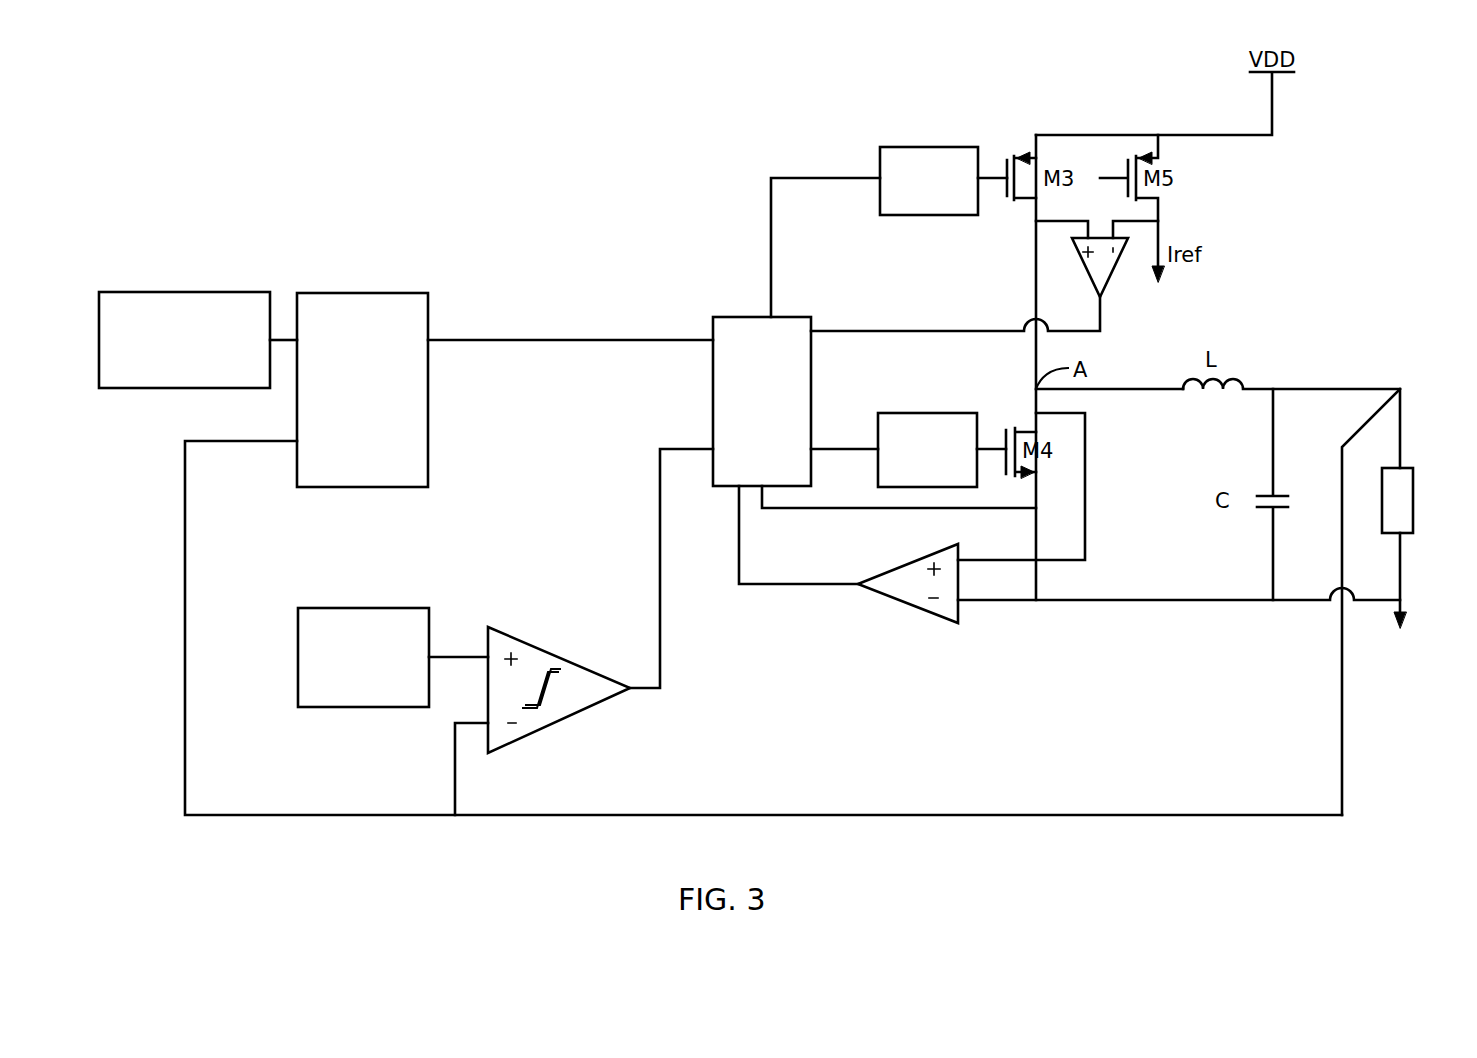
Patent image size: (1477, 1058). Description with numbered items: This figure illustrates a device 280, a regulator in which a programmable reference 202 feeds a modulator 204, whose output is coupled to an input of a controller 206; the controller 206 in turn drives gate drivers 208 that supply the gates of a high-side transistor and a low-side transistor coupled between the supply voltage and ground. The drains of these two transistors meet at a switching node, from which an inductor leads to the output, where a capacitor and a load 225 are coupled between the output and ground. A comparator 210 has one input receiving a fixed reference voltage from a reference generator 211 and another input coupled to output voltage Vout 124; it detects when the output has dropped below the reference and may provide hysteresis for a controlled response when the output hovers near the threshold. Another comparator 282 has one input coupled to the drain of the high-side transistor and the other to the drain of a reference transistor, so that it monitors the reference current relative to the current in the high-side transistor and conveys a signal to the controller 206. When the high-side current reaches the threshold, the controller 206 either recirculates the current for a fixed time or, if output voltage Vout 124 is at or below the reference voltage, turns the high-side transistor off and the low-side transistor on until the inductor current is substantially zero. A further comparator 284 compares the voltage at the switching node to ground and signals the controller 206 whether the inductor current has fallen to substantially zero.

The output voltage Vout 124 is at (985, 815).
The programmable reference unit 202 is at (185, 292).
The modulator 204 is at (356, 293).
The controller 206 is at (740, 316).
The gate drivers 208 is at (905, 147).
The comparator 210 is at (545, 648).
The reference generator 211 is at (353, 608).
The load 225 is at (1413, 530).
The device 280 is at (1383, 102).
The comparator 282 is at (1118, 268).
The comparator 284 is at (931, 616).